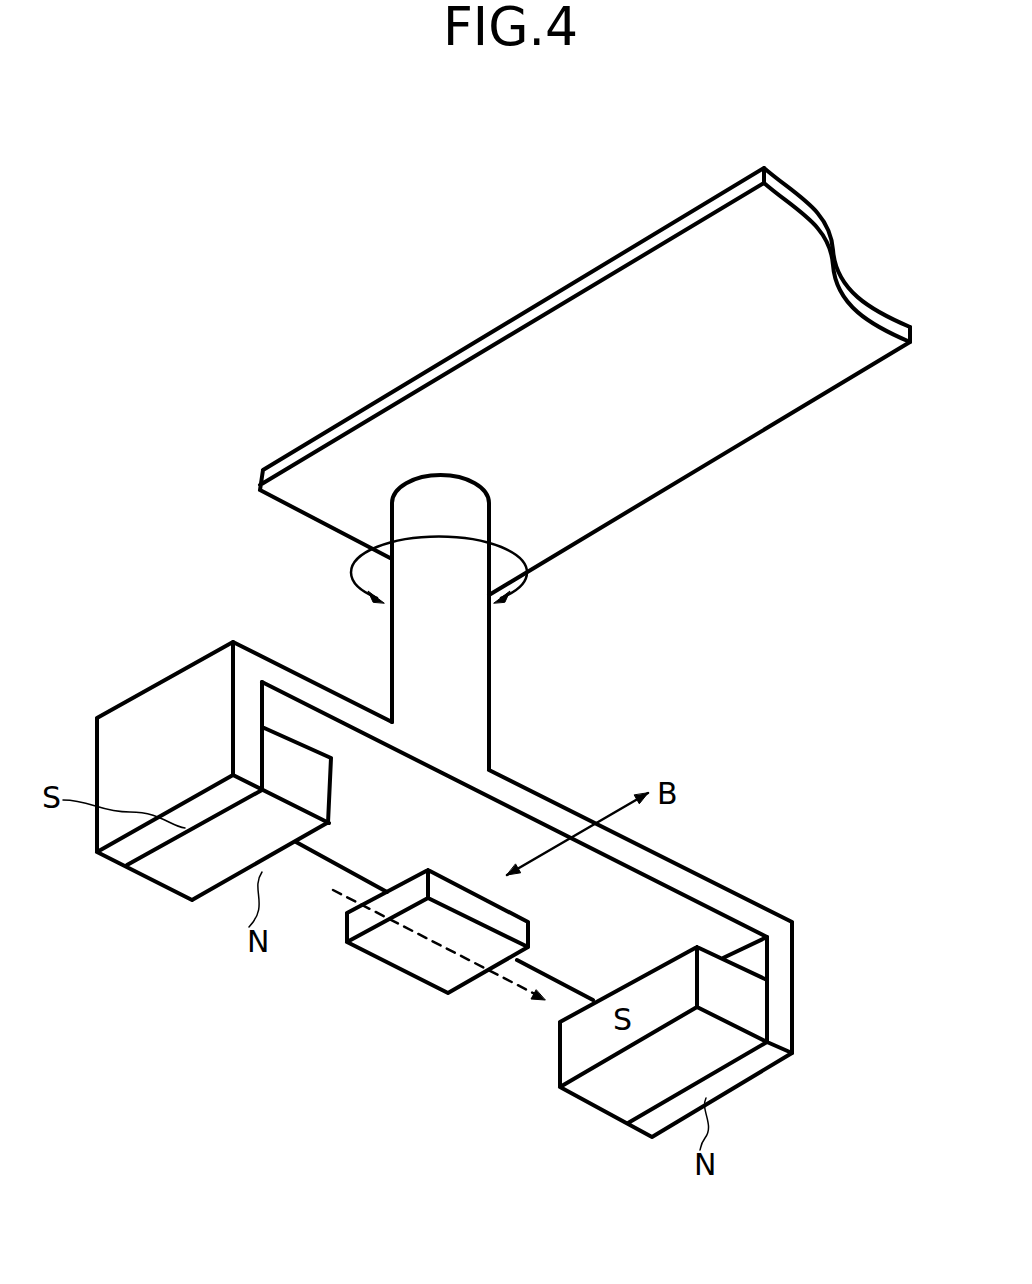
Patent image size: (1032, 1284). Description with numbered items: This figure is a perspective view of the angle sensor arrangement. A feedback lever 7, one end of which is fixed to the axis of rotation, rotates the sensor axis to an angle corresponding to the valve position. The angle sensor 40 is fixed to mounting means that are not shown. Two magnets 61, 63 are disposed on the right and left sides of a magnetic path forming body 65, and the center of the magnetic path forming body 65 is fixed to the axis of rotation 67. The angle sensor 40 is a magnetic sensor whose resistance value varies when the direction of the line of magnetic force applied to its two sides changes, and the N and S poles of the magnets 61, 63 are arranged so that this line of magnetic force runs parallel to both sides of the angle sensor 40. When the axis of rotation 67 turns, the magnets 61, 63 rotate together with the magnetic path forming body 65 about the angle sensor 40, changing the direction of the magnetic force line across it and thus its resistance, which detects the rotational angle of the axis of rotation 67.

The feedback lever 7 is at (627, 250).
The axis of rotation 67 is at (443, 475).
The magnetic path forming body 65 is at (545, 796).
The magnet 63 is at (289, 773).
The magnet 61 is at (736, 1002).
The angle sensor 40 is at (418, 960).